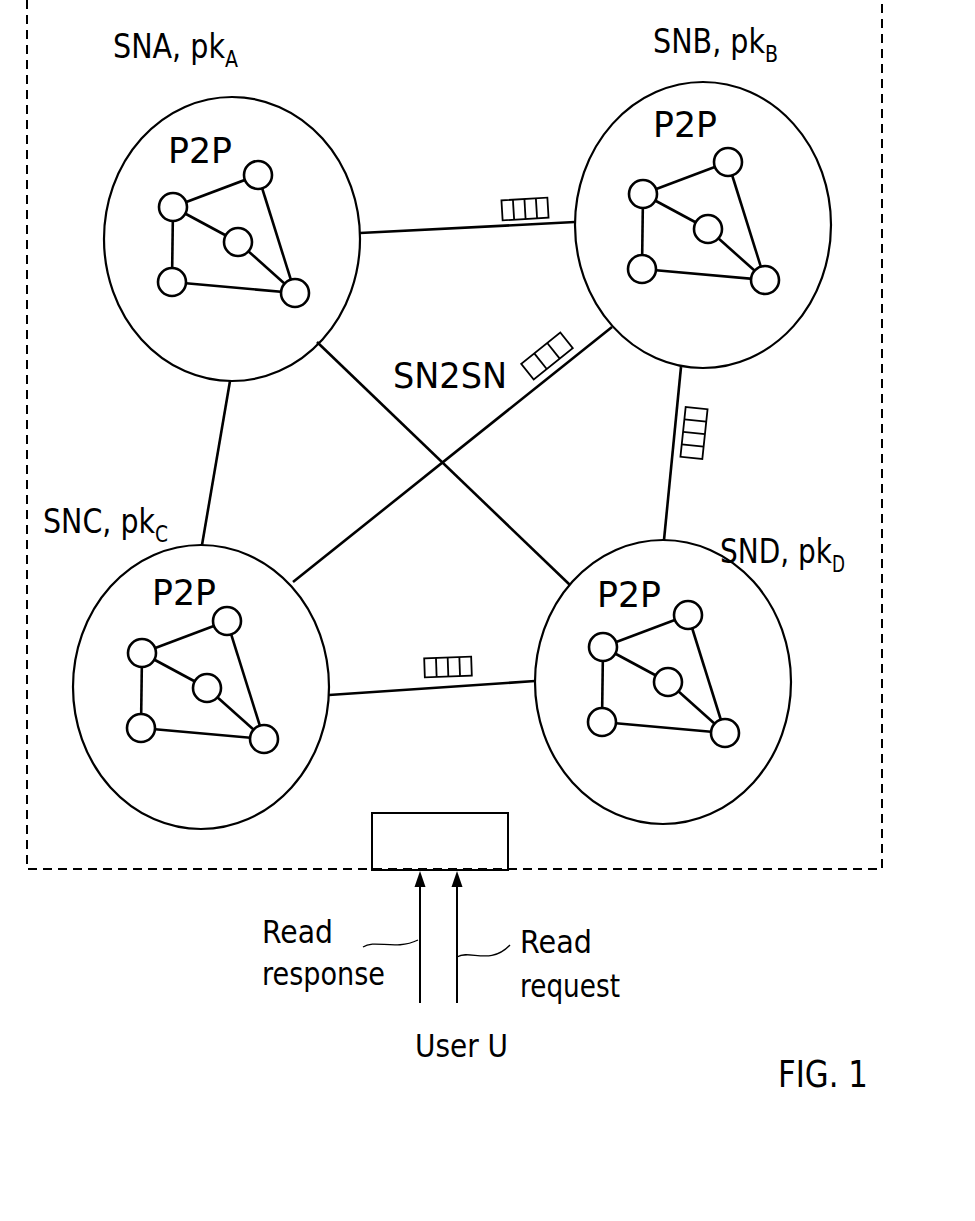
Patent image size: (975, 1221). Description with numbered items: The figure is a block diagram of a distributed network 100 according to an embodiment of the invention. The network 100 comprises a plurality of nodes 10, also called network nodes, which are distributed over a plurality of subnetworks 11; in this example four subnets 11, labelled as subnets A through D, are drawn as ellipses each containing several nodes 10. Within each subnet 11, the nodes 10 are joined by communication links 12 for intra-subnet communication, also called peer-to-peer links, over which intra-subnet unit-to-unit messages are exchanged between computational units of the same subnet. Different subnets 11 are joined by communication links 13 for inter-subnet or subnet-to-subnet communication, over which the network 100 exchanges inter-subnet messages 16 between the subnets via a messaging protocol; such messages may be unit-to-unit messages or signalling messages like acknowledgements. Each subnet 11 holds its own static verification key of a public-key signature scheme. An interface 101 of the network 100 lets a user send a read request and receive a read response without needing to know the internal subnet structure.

The node 10 is at (304, 281).
The subnetwork 11 is at (300, 99).
The communication link 12 is at (280, 222).
The communication link 13 is at (448, 229).
The inter-subnet message 16 is at (587, 416).
The distributed network 100 is at (770, 1036).
The interface 101 is at (492, 851).